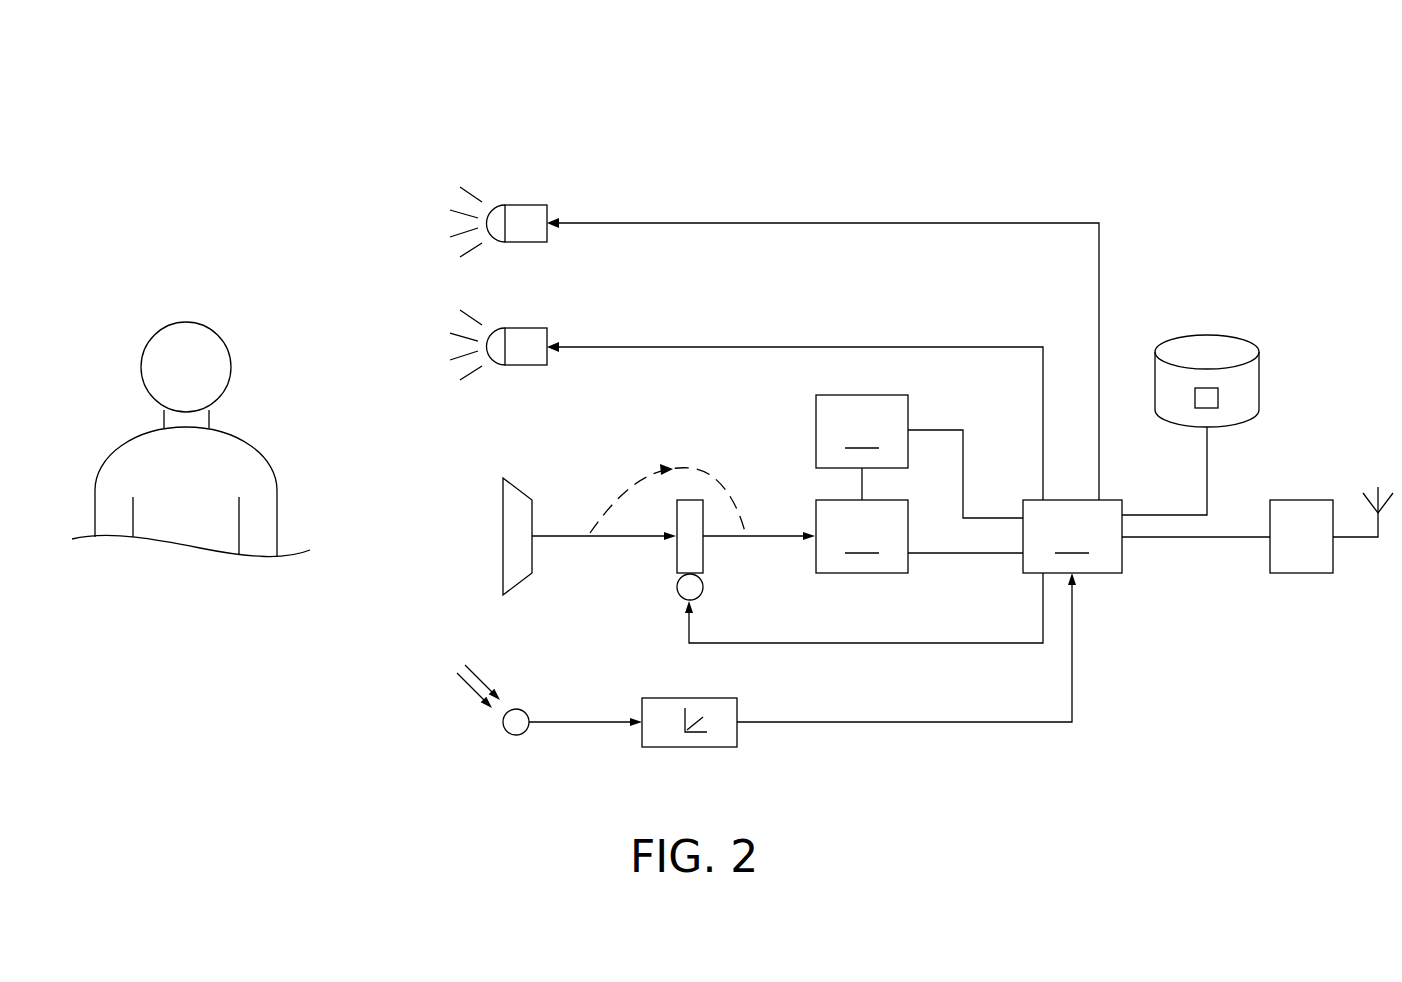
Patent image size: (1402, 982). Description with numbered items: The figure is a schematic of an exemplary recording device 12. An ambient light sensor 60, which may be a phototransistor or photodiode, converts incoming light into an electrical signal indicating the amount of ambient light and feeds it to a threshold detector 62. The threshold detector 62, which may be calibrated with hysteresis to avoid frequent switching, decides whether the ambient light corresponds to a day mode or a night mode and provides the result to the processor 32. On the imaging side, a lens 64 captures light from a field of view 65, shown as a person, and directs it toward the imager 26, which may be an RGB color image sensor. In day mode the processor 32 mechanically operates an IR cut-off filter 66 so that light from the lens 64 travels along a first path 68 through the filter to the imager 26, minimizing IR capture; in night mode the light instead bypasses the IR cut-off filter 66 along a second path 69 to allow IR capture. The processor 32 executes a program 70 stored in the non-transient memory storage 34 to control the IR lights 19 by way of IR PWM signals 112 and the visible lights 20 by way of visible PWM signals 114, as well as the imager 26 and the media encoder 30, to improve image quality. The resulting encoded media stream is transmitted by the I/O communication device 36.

The recording device 12 is at (1203, 129).
The IR lights 19 is at (527, 205).
The visible lights 20 is at (522, 328).
The imager 26 is at (919, 536).
The media encoder 30 is at (919, 456).
The processor 32 is at (977, 535).
The non-transient memory storage 34 is at (1265, 355).
The I/O communication device 36 is at (1297, 573).
The ambient light sensor 60 is at (502, 730).
The threshold detector 62 is at (685, 747).
The lens 64 is at (518, 490).
The field of view 65 is at (212, 262).
The IR cut-off filter 66 is at (673, 552).
The first path 68 is at (727, 540).
The second path 69 is at (707, 473).
The program 70 is at (1218, 398).
The IR PWM signals 112 is at (868, 223).
The visible PWM signals 114 is at (868, 347).